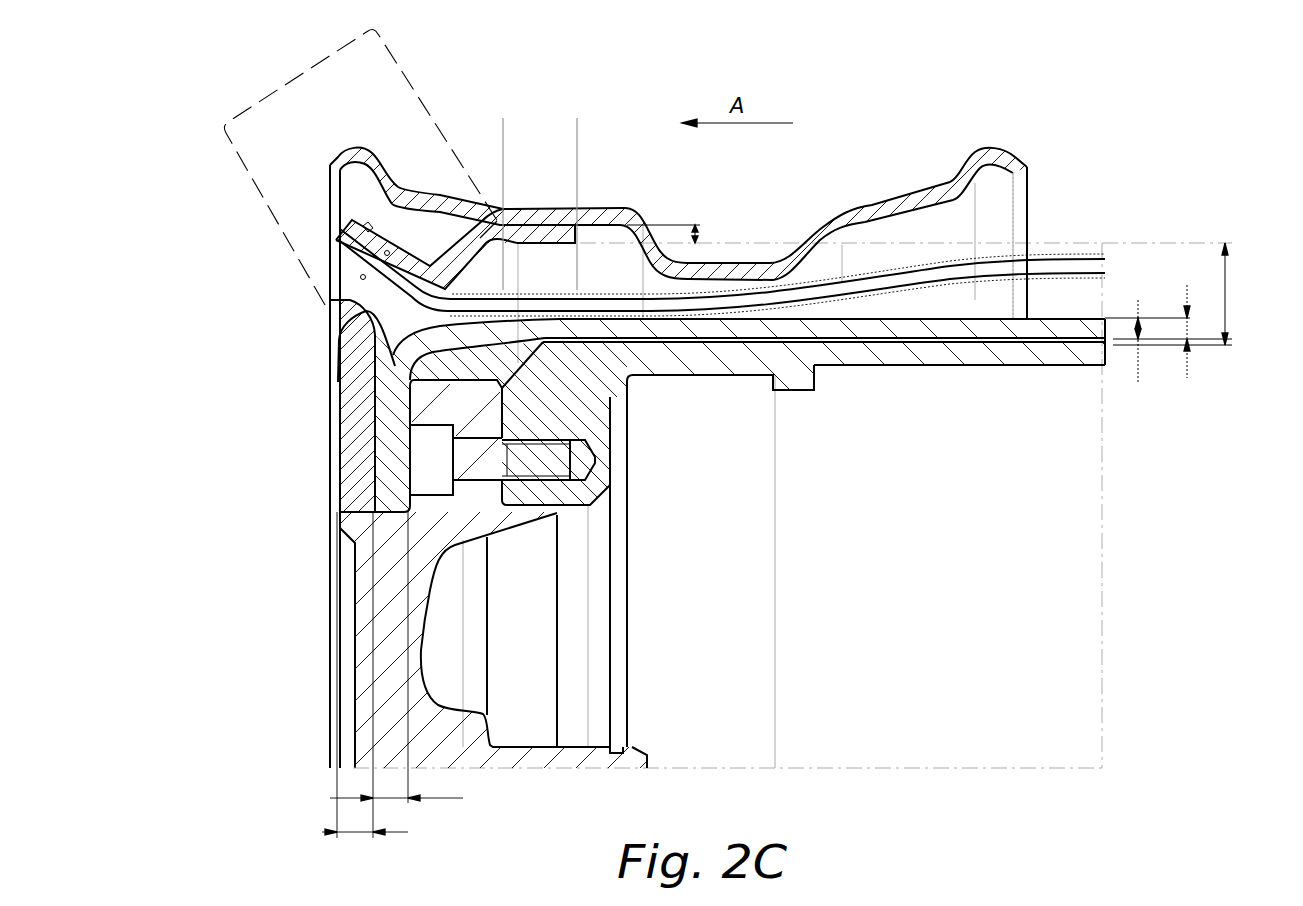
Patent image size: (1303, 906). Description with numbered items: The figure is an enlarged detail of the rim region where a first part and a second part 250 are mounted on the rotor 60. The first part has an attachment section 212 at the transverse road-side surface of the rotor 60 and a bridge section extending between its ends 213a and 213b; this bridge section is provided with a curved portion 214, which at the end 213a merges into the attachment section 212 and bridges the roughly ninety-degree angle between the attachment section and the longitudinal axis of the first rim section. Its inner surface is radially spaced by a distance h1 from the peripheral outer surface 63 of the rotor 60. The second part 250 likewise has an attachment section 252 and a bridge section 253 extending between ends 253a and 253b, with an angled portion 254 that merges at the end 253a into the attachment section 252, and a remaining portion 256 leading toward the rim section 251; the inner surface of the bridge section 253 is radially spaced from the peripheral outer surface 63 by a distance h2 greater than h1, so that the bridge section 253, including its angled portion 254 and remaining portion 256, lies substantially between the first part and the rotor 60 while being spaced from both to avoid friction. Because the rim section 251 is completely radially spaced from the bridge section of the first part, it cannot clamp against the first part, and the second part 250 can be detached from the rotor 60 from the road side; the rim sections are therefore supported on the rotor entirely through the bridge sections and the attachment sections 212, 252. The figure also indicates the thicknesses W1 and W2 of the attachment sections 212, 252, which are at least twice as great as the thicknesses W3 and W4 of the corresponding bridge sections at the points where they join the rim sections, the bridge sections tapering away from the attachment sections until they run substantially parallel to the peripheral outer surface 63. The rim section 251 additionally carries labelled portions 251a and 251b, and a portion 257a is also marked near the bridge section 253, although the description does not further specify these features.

The second part 250 is at (1028, 202).
The rim section 251 is at (739, 263).
The first bead of frame plate 251a is at (360, 148).
The second bead of frame plate 251b is at (1003, 147).
The attachment section 252 is at (340, 513).
The bridge section 253 is at (448, 268).
The end of bridge section 253a is at (345, 302).
The end of bridge section 253b is at (512, 232).
The angled portion 254 is at (302, 70).
The remaining portion 256 is at (503, 135).
The contact portion 257a is at (457, 242).
The attachment section 212 is at (340, 367).
The end of bridge section 213a is at (345, 328).
The end of bridge section 213b is at (600, 383).
The curved portion 214 is at (565, 345).
The rotor 60 is at (914, 343).
The peripheral outer surface 63 is at (1017, 344).
The thickness of attachment section of first part W1 is at (365, 675).
The thickness of attachment section of second part W2 is at (396, 657).
The thickness of first bridge section W3 is at (1188, 332).
The thickness of second bridge section W4 is at (698, 235).
The radial distance of first bridge section h1 is at (1138, 346).
The radial distance of second bridge section h2 is at (1226, 304).